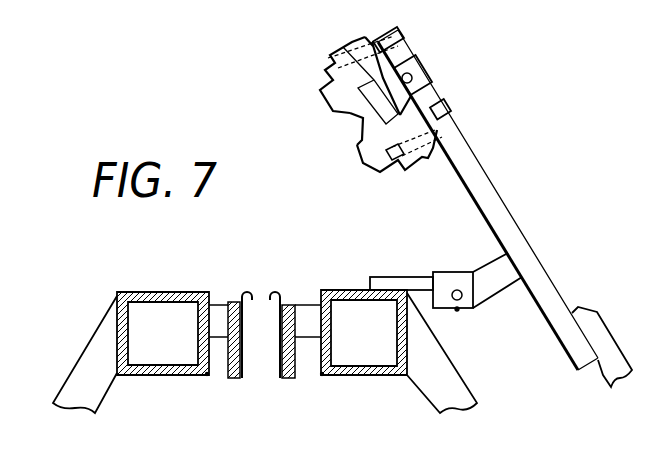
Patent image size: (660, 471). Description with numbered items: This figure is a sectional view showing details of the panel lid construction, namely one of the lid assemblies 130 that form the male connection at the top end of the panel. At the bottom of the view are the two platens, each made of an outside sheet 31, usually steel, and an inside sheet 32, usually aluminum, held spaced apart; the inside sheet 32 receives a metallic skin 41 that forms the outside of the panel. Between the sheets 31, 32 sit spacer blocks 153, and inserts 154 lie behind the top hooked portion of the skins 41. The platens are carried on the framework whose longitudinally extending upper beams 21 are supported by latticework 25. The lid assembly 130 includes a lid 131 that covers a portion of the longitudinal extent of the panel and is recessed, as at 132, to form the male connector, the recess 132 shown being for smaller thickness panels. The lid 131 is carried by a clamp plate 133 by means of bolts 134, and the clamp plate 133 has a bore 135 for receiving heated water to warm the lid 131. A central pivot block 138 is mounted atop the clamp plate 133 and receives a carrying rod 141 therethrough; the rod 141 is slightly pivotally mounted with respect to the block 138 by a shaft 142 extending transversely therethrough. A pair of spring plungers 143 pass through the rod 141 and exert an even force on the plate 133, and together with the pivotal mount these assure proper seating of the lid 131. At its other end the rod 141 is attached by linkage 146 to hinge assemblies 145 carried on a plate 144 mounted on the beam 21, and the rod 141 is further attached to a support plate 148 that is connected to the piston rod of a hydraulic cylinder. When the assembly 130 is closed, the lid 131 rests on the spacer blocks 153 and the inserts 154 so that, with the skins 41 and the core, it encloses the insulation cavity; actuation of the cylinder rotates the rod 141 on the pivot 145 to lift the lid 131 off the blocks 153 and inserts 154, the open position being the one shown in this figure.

The upper beam 21 is at (158, 292).
The latticework 25 is at (95, 380).
The outside sheet 31 is at (205, 375).
The inside sheet 32 is at (292, 375).
The skin 41 is at (240, 345).
The lid assembly 130 is at (447, 222).
The lid 131 is at (362, 160).
The recess 132 is at (350, 113).
The clamp plate 133 is at (350, 51).
The bolt 134 is at (350, 60).
The bore 135 is at (360, 90).
The central pivot block 138 is at (425, 73).
The carrying rod 141 is at (473, 180).
The shaft 142 is at (412, 78).
The spring plunger 143 is at (393, 37).
The plate 144 is at (398, 273).
The hinge assembly 145 is at (448, 273).
The linkage 146 is at (497, 278).
The support plate 148 is at (617, 363).
The spacer block 153 is at (218, 308).
The insert 154 is at (243, 298).